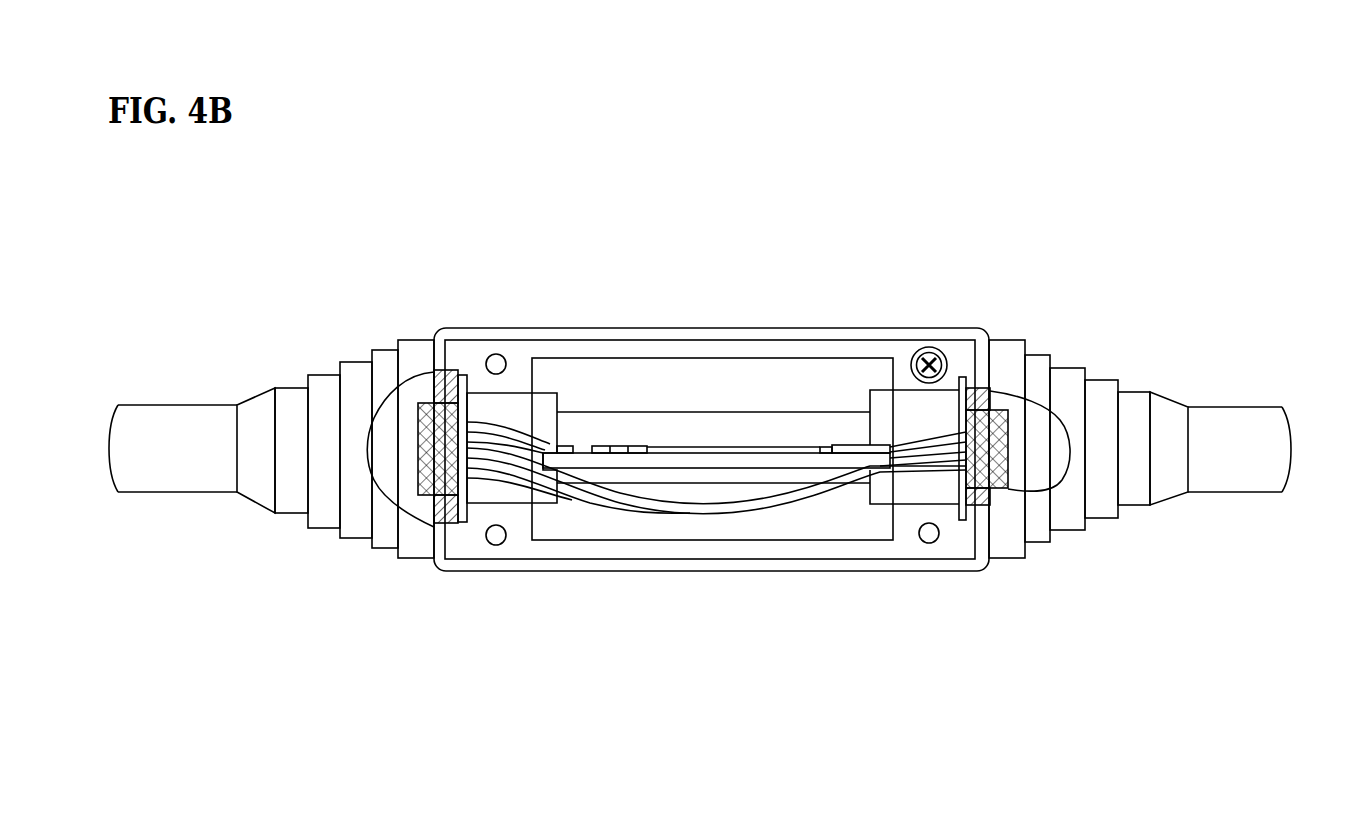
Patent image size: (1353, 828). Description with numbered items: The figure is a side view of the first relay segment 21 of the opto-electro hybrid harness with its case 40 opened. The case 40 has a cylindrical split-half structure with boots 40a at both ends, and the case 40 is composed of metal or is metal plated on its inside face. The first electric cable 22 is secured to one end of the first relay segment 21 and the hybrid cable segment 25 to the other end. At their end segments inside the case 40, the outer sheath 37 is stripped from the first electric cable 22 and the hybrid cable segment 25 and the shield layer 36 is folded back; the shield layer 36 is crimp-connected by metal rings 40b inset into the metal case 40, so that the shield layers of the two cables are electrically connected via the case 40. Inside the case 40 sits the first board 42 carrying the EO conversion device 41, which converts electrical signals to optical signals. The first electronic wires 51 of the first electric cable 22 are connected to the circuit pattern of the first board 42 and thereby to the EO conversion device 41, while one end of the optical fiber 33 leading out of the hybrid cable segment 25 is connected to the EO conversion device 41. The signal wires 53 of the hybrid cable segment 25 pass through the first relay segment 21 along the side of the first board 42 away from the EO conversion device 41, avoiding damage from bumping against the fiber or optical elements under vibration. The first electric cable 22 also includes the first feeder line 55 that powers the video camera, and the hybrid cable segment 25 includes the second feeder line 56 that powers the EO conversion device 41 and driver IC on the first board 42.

The first relay segment 21 is at (889, 233).
The first electric cable 22 is at (150, 403).
The hybrid cable segment 25 is at (1213, 413).
The optical fiber 33 is at (782, 443).
The shield layer 36 is at (430, 497).
The outer sheath 37 is at (395, 480).
The case 40 is at (750, 328).
The boot 40a is at (330, 374).
The metal ring 40b is at (449, 372).
The EO conversion device 41 is at (607, 443).
The first board 42 is at (757, 462).
The first electronic wires 51 is at (517, 420).
The signal wires 53 is at (683, 517).
The first feeder line 55 is at (573, 500).
The second feeder line 56 is at (883, 457).